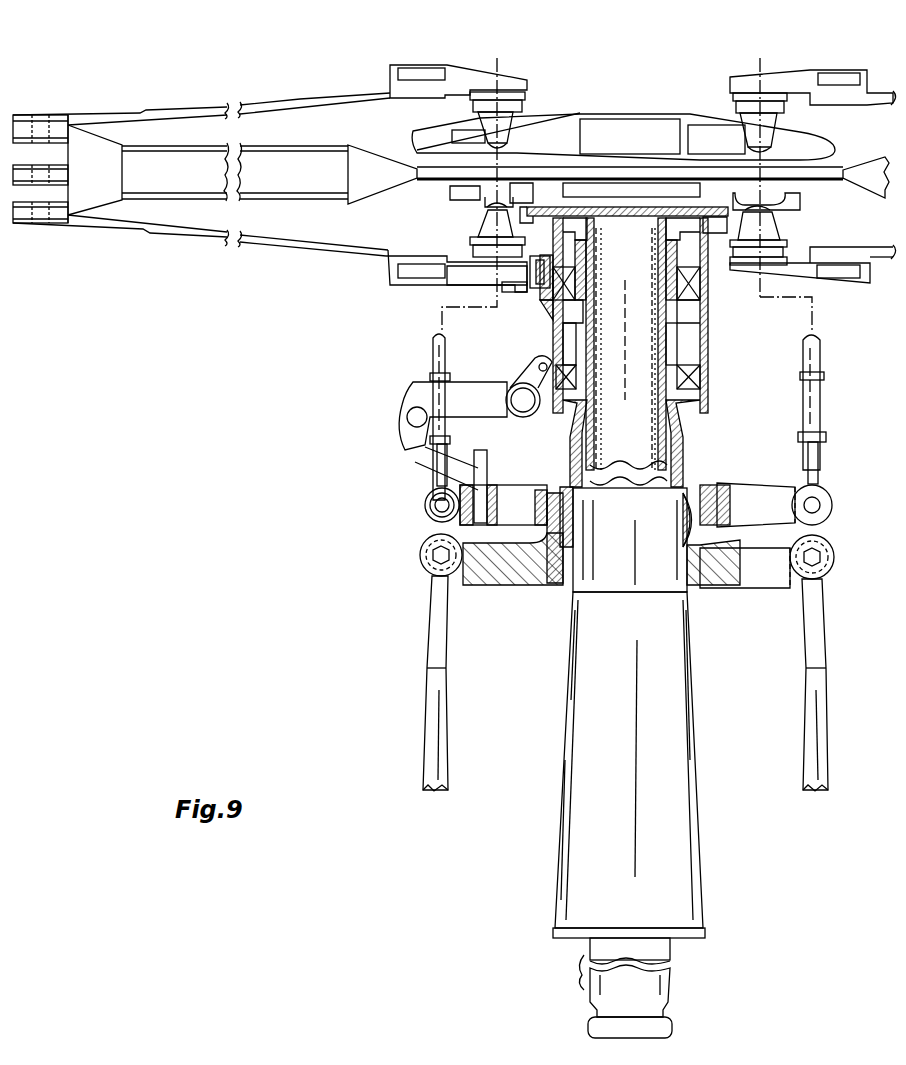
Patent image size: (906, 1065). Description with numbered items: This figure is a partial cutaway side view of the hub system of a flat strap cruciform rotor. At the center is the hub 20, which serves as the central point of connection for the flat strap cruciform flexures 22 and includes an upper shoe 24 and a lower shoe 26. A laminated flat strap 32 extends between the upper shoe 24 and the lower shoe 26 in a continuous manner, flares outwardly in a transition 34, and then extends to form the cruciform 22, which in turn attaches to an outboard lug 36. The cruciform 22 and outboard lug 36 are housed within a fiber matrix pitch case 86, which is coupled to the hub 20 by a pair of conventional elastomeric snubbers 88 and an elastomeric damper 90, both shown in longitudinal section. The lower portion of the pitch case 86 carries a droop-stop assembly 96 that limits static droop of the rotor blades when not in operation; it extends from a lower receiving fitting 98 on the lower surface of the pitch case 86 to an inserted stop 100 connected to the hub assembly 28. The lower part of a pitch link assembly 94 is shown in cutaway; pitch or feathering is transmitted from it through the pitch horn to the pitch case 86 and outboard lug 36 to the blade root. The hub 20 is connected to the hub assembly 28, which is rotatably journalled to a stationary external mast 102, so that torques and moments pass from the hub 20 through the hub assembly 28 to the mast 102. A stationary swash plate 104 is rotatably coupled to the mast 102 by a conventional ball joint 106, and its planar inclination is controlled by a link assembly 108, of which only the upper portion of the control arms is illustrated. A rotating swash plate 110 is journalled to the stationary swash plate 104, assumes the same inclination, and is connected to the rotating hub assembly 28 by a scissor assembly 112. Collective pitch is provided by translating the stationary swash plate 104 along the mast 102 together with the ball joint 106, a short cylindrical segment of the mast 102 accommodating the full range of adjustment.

The hub 20 is at (630, 96).
The flat strap cruciform flexure 22 is at (286, 178).
The upper shoe 24 is at (690, 118).
The lower shoe 26 is at (780, 200).
The hub assembly 28 is at (702, 363).
The laminated flat strap 32 is at (635, 172).
The transition 34 is at (372, 180).
The outboard lug 36 is at (27, 213).
The fiber matrix pitch case 86 is at (266, 104).
The elastomeric snubbers 88 is at (470, 202).
The elastomeric damper 90 is at (522, 78).
The pitch link assembly 94 is at (432, 352).
The droop-stop assembly 96 is at (432, 294).
The lower receiving fitting 98 is at (468, 275).
The inserted stop 100 is at (528, 292).
The stationary external mast 102 is at (678, 644).
The stationary swash plate 104 is at (500, 598).
The ball joint 106 is at (705, 482).
The link assembly 108 is at (447, 730).
The rotating swash plate 110 is at (512, 488).
The scissor assembly 112 is at (412, 452).